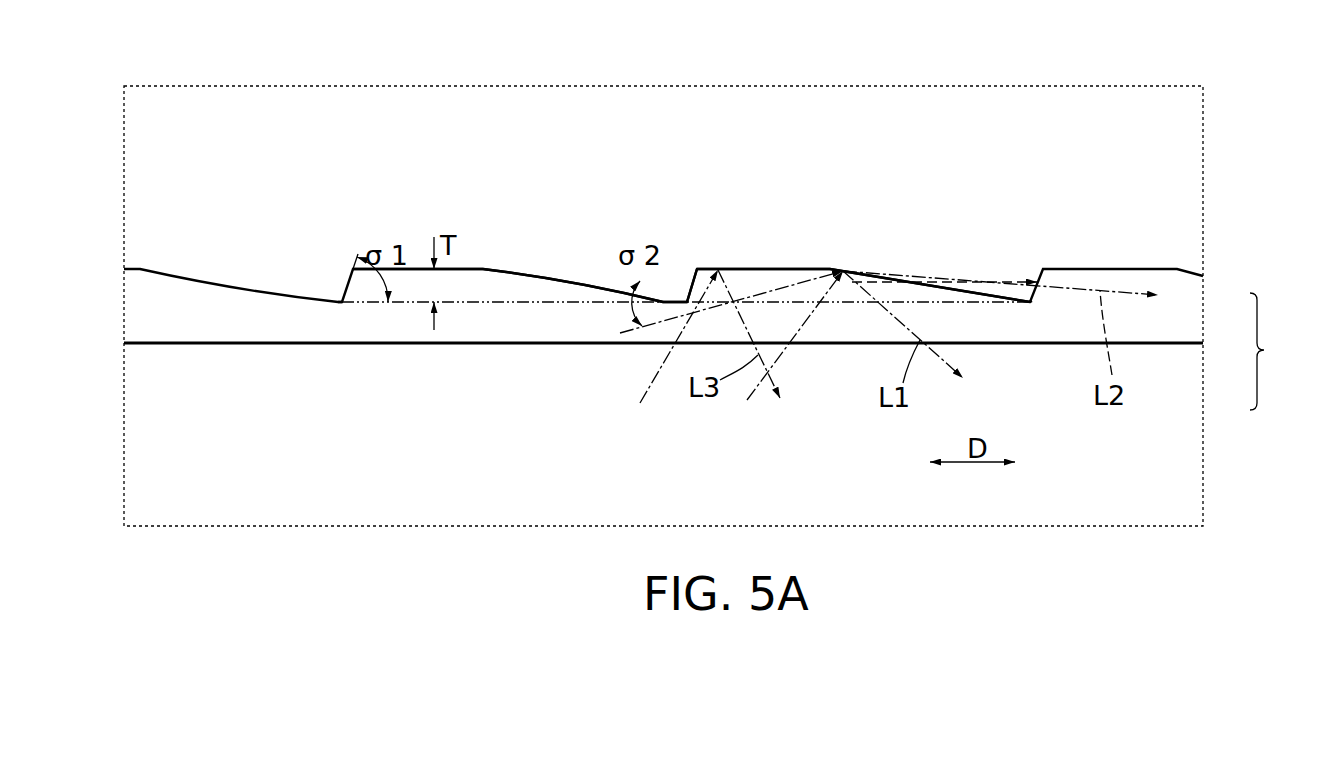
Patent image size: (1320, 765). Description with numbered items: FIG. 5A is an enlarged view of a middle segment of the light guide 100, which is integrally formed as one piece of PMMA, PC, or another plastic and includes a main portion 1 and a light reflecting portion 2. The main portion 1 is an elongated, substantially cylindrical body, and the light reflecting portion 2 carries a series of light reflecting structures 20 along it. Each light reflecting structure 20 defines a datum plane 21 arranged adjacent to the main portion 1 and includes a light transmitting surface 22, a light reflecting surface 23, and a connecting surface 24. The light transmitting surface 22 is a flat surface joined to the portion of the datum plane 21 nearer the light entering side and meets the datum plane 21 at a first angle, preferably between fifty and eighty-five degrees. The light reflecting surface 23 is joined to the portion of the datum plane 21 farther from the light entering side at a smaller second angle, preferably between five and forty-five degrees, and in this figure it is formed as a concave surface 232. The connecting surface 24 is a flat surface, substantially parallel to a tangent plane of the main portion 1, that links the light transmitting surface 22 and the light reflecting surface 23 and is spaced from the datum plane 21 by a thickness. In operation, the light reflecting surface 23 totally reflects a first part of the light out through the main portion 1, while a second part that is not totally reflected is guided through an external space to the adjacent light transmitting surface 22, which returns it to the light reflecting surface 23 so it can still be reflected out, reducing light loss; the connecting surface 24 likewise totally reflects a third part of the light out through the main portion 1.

The light guide 100 is at (721, 282).
The main portion 1 is at (1180, 401).
The light reflecting portion 2 is at (1180, 316).
The light reflecting structure 20 is at (483, 253).
The datum plane 21 is at (412, 303).
The light transmitting surface 22 is at (690, 268).
The light reflecting surface 23 is at (866, 274).
The connecting surface 24 is at (417, 268).
The concave surface 232 is at (569, 285).